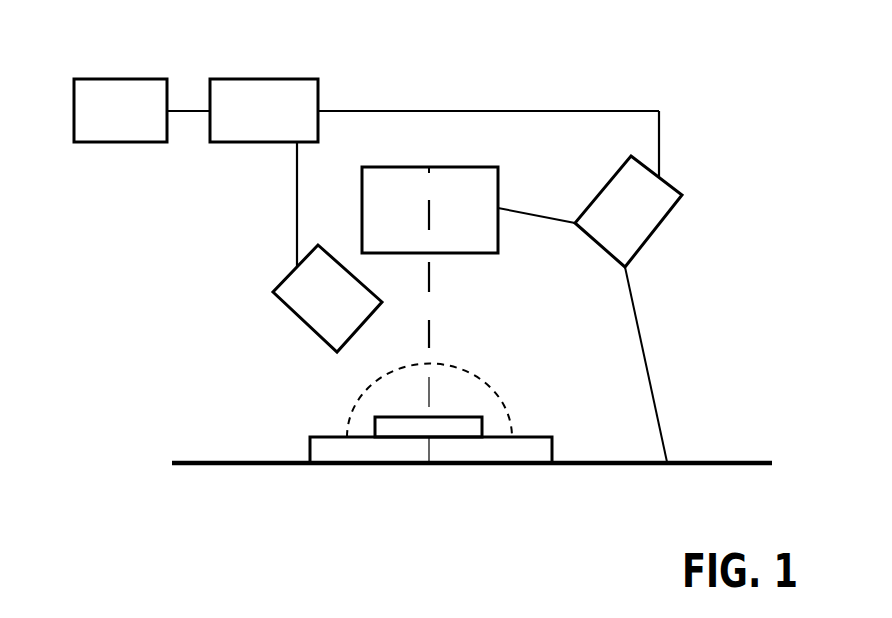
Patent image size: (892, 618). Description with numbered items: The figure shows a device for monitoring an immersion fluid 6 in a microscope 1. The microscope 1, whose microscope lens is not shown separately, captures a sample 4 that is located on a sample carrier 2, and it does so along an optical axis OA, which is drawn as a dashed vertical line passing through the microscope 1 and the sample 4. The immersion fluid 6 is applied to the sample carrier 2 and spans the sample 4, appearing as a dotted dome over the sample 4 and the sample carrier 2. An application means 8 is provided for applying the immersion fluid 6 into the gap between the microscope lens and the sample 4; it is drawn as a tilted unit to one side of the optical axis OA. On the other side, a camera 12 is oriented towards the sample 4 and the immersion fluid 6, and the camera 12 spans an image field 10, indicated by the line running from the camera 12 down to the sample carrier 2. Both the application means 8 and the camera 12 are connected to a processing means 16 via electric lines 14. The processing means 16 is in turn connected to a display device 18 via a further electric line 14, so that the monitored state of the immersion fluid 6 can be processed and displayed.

The microscope 1 is at (480, 172).
The sample carrier 2 is at (503, 453).
The sample 4 is at (405, 428).
The immersion fluid 6 is at (483, 387).
The application means 8 is at (317, 312).
The image field 10 is at (645, 357).
The camera 12 is at (665, 197).
The electric lines 14 is at (297, 163).
The processing means 16 is at (285, 93).
The display device 18 is at (130, 88).
The optical axis OA is at (432, 333).